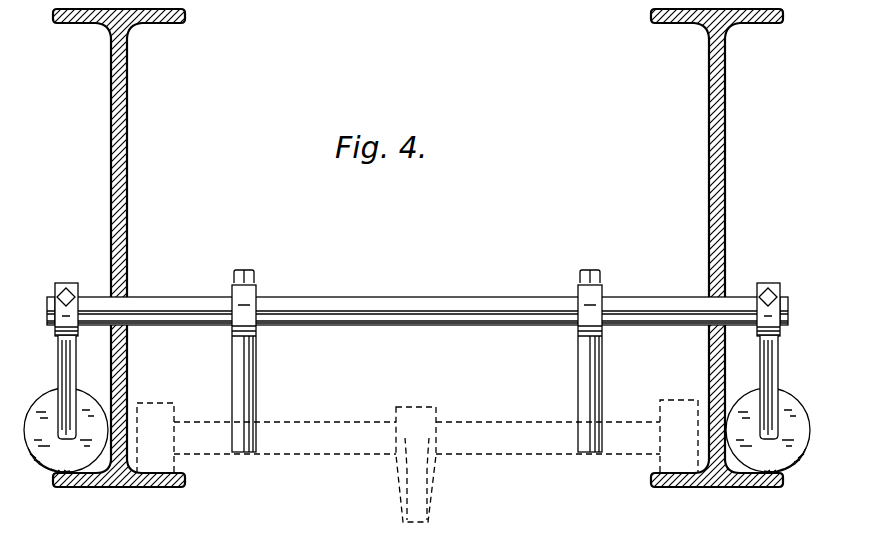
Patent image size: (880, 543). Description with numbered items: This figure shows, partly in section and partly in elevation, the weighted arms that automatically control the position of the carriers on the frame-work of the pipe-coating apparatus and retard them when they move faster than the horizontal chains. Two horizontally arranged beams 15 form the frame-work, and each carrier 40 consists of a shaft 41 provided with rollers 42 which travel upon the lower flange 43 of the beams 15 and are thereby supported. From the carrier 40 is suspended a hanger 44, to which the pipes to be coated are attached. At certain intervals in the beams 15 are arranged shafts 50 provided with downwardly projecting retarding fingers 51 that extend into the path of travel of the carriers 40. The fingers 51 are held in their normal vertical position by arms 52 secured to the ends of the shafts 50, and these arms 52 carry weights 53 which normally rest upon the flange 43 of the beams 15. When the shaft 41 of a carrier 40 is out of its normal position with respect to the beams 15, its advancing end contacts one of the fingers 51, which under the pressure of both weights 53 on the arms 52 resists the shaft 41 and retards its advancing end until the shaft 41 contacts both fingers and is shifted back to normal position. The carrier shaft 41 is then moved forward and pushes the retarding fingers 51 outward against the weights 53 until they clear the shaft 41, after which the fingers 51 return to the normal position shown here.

The beams 15 is at (127, 212).
The carrier 40 is at (352, 428).
The shaft 41 is at (305, 456).
The rollers 42 is at (162, 397).
The flange 43 is at (127, 483).
The hanger 44 is at (423, 503).
The shafts 50 is at (410, 300).
The retarding fingers 51 is at (248, 383).
The arms 52 is at (62, 357).
The weights 53 is at (76, 455).